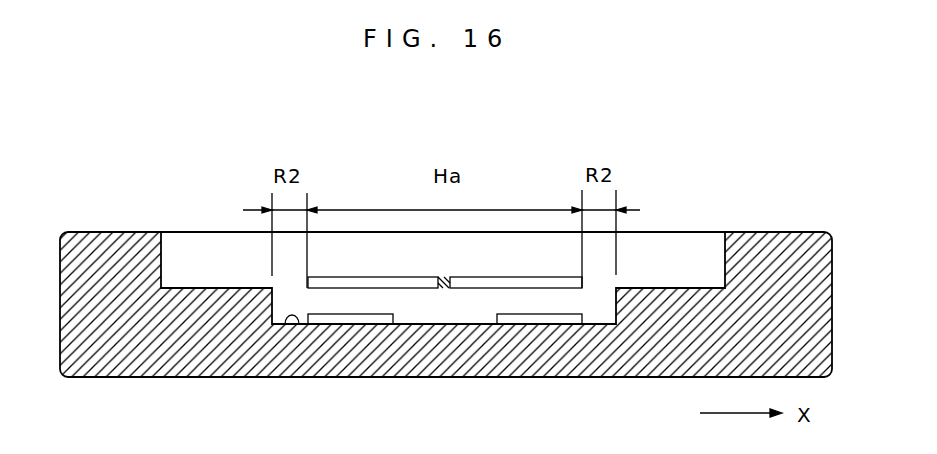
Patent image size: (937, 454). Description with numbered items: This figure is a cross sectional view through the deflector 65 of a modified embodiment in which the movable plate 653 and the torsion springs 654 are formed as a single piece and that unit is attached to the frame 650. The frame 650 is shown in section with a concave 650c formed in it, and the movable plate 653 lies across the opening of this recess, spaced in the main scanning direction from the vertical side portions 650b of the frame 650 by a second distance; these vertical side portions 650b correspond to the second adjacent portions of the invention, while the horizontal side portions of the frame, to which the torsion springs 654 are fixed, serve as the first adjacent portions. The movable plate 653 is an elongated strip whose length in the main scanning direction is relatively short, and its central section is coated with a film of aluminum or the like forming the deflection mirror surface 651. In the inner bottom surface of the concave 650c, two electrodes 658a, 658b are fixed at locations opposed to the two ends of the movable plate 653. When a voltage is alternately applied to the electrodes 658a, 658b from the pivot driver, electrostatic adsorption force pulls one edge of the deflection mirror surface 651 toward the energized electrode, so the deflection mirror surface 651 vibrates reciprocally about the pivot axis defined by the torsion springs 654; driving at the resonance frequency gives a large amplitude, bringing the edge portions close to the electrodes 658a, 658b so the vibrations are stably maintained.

The deflector 65 is at (490, 259).
The frame 650 is at (800, 302).
The vertical side portions 650b is at (245, 312).
The concave 650c is at (297, 325).
The deflection mirror surface 651 is at (445, 262).
The movable plate 653 is at (368, 281).
The torsion springs 654 is at (445, 278).
The electrode 658a is at (360, 315).
The electrode 658b is at (523, 315).